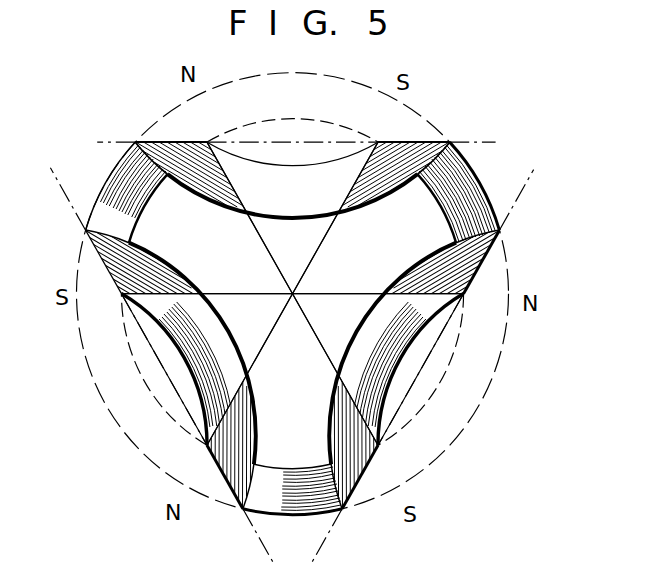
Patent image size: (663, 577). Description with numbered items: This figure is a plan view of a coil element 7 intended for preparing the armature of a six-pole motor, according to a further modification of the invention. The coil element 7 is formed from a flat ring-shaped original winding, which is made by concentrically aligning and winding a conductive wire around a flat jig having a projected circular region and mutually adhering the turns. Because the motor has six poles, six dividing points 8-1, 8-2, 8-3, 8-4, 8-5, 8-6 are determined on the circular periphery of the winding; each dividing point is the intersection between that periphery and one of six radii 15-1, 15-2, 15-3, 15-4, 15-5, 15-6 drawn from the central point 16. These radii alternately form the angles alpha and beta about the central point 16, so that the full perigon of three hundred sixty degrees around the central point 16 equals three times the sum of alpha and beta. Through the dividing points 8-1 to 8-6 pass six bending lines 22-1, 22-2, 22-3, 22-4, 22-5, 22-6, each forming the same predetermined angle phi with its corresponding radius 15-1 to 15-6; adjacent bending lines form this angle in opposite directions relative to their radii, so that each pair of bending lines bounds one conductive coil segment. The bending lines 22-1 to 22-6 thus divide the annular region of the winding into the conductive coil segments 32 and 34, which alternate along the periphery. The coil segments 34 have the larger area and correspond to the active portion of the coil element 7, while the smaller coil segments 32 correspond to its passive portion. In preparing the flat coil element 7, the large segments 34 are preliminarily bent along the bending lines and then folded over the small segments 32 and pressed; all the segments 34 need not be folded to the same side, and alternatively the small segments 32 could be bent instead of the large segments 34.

The coil element 7 is at (407, 93).
The central point 16 is at (296, 293).
The dividing point 8-1 is at (380, 143).
The dividing point 8-2 is at (208, 143).
The dividing point 8-3 is at (122, 297).
The dividing point 8-4 is at (206, 444).
The dividing point 8-5 is at (383, 444).
The dividing point 8-6 is at (464, 298).
The bending line 22-1 is at (449, 141).
The bending line 22-2 is at (153, 141).
The bending line 22-3 is at (108, 272).
The bending line 22-4 is at (238, 511).
The bending line 22-5 is at (345, 511).
The bending line 22-6 is at (506, 231).
The radius 15-1 is at (352, 190).
The radius 15-2 is at (228, 188).
The radius 15-3 is at (180, 296).
The radius 15-4 is at (250, 367).
The radius 15-5 is at (312, 341).
The radius 15-6 is at (405, 288).
The conductive coil segment 32 is at (484, 195).
The conductive coil segment 34 is at (366, 203).